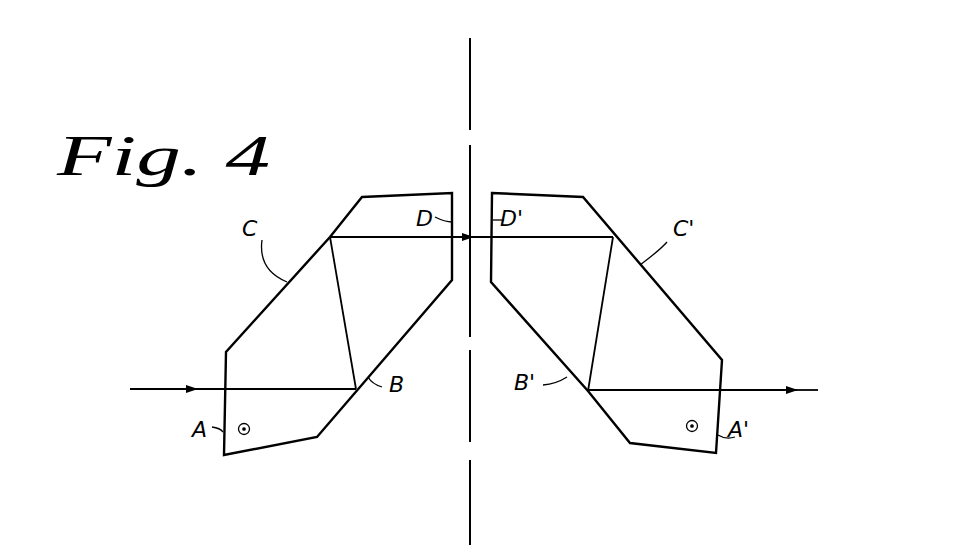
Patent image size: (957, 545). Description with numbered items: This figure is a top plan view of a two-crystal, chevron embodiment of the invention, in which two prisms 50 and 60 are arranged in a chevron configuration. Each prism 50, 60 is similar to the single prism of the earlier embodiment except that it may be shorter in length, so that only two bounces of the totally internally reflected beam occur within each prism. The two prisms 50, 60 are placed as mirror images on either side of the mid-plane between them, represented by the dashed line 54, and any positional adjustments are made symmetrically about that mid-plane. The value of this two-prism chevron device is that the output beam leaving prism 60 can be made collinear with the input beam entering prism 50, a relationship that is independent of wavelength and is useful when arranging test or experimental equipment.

The prism 50 is at (394, 300).
The prism 60 is at (553, 302).
The mid-plane line 54 is at (468, 428).